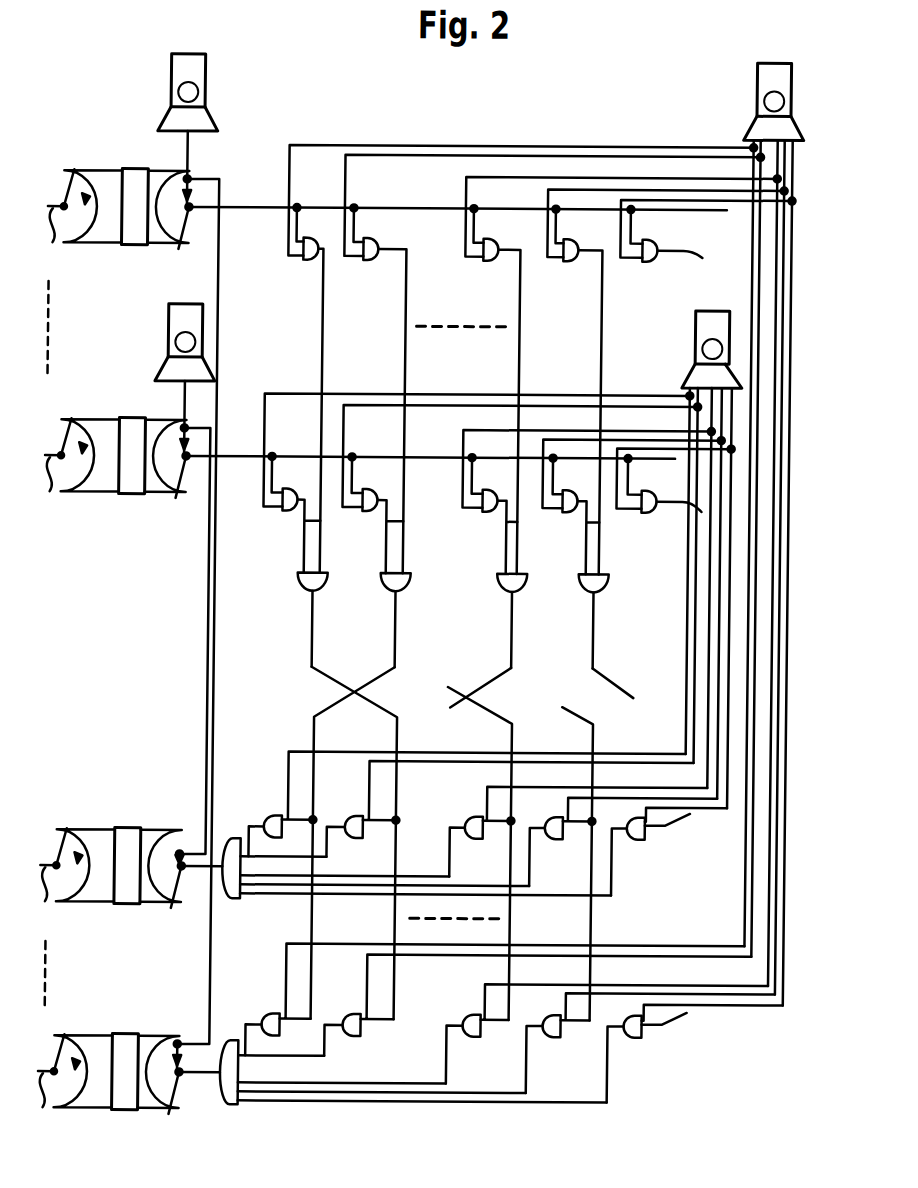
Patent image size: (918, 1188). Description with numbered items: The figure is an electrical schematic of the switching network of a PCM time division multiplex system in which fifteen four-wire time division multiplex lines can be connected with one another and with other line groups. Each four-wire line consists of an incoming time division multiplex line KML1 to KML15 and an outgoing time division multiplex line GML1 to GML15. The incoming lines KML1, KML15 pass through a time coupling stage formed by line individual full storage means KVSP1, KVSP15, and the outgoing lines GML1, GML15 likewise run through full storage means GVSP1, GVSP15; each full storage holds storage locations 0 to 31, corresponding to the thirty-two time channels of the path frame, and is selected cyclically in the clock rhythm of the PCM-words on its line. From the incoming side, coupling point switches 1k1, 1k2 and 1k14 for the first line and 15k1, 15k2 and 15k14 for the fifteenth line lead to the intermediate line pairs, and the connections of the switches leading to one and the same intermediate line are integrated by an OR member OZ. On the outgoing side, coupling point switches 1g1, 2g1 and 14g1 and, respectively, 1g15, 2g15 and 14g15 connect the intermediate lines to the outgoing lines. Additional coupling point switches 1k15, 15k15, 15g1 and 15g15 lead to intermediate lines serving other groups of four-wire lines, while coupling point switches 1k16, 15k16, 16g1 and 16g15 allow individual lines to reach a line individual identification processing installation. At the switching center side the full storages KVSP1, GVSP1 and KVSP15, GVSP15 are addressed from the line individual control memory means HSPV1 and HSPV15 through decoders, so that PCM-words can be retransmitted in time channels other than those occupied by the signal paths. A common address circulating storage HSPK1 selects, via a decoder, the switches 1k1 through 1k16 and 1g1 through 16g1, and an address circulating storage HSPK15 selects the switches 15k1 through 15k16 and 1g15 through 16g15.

The time division multiplex line individual control memory means HSPV1 is at (188, 98).
The time division multiplex line individual control memory means HSPV15 is at (177, 349).
The address circulating storage HSPK1 is at (764, 515).
The address circulating storage HSPK15 is at (709, 542).
The time division multiplex line individual full storage means KVSP1 is at (127, 187).
The time division multiplex line individual full storage means KVSP15 is at (125, 437).
The incoming time division multiplex line KML1 is at (71, 225).
The incoming time division multiplex line KML15 is at (72, 474).
The time division multiplex line individual full storage means GVSP1 is at (118, 1051).
The time division multiplex line individual full storage means GVSP15 is at (120, 847).
The outgoing time division multiplex line GML1 is at (66, 1038).
The outgoing time division multiplex line GML15 is at (68, 883).
The storage location 31 is at (139, 658).
The storage location 0 is at (93, 606).
The coupling point switch 1k1 is at (519, 359).
The coupling point switch 1k2 is at (552, 363).
The coupling point switch 1k14 is at (621, 375).
The coupling point switch 1k15 is at (666, 380).
The coupling point switch 1k16 is at (708, 251).
The coupling point switch 15k1 is at (475, 482).
The coupling point switch 15k2 is at (520, 488).
The coupling point switch 15k14 is at (582, 501).
The coupling point switch 15k15 is at (627, 505).
The coupling point switch 15k16 is at (675, 500).
The OR member OZ is at (466, 615).
The coupling point switch 1g15 is at (464, 805).
The coupling point switch 2g15 is at (507, 810).
The coupling point switch 14g15 is at (578, 836).
The coupling point switch 15g15 is at (623, 843).
The coupling point switch 16g15 is at (669, 852).
The coupling point switch 1g1 is at (493, 1000).
The coupling point switch 2g1 is at (536, 1006).
The coupling point switch 14g1 is at (607, 1034).
The coupling point switch 15g1 is at (650, 1043).
The coupling point switch 16g1 is at (695, 1054).